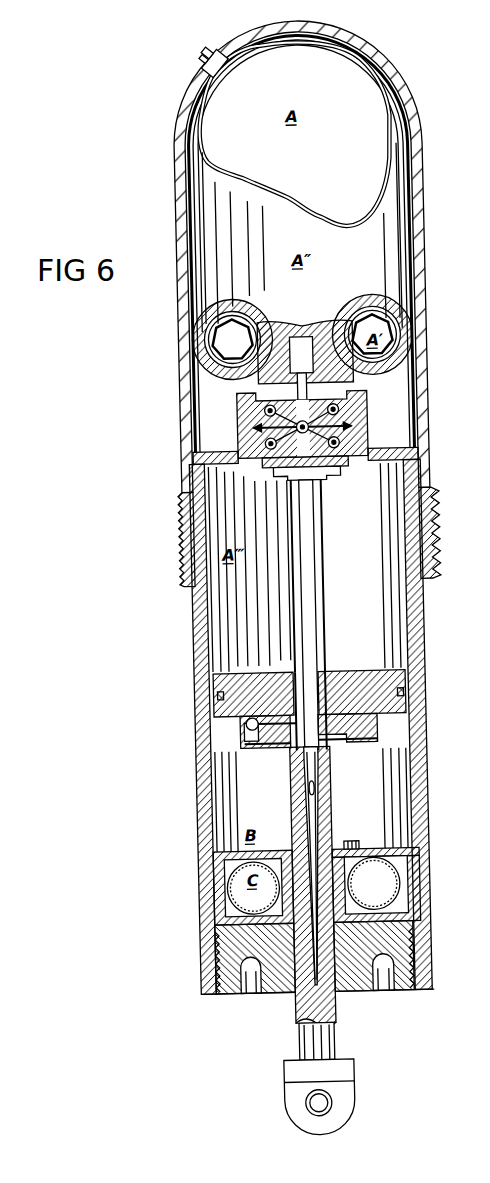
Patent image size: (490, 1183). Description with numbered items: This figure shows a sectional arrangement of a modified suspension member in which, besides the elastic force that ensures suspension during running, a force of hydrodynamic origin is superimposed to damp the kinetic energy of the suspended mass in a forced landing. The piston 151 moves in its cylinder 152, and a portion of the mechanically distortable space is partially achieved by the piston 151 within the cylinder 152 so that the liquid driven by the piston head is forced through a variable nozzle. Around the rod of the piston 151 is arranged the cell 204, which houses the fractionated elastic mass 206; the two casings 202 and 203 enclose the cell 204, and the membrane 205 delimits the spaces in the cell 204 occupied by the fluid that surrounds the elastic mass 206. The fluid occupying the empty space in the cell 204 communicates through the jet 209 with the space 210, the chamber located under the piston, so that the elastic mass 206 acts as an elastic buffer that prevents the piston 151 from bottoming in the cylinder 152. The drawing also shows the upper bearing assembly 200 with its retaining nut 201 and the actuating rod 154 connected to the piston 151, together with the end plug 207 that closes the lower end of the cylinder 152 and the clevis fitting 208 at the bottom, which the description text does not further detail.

The thrust bearing assembly 200 is at (365, 422).
The retaining nut 201 is at (327, 479).
The actuating rod 154 is at (310, 528).
The cylinder 152 is at (416, 613).
The piston 151 is at (288, 803).
The space 210 is at (378, 767).
The jet 209 is at (356, 851).
The casing 202 is at (400, 858).
The membrane 205 is at (380, 887).
The cell 204 is at (387, 912).
The casing 203 is at (367, 916).
The fractionated elastic mass 206 is at (243, 898).
The end plug 207 is at (228, 940).
The clevis fitting 208 is at (336, 990).